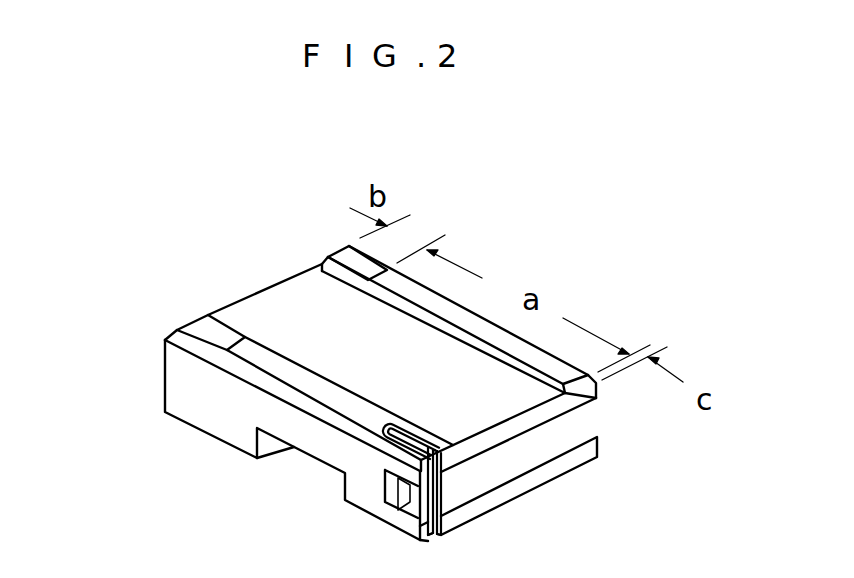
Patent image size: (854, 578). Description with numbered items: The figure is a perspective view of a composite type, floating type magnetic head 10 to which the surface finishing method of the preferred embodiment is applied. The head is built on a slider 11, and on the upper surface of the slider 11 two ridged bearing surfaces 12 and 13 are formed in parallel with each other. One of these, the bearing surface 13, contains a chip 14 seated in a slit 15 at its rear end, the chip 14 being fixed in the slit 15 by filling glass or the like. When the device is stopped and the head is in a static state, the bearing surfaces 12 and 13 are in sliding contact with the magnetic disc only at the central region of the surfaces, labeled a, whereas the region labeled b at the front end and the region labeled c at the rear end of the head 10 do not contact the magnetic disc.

The composite magnetic head 10 is at (177, 300).
The slider 11 is at (288, 307).
The bearing surface 12 is at (562, 372).
The bearing surface 13 is at (337, 398).
The chip 14 is at (441, 493).
The slit 15 is at (396, 420).